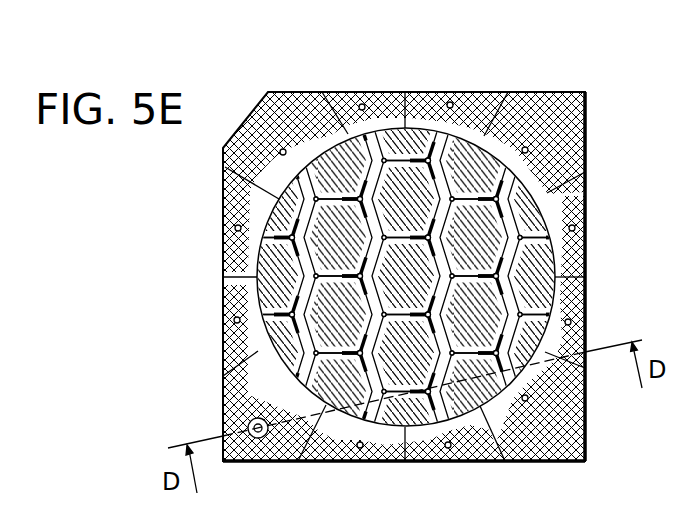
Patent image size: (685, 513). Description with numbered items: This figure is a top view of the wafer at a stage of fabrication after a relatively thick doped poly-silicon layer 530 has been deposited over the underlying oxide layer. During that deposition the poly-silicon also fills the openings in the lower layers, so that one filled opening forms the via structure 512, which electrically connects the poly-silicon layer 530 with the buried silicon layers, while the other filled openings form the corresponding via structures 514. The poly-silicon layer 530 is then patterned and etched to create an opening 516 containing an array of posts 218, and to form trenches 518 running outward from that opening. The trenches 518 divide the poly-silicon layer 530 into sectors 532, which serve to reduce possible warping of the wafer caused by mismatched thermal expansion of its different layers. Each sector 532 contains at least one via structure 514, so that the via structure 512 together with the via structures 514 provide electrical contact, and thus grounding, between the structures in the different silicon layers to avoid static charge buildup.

The doped poly-silicon layer 530 is at (536, 106).
The opening 516 is at (406, 265).
The post 218 is at (430, 238).
The trench 518 is at (588, 162).
The sector 532 is at (231, 195).
The via structure 512 is at (259, 449).
The via structure 514 is at (440, 462).